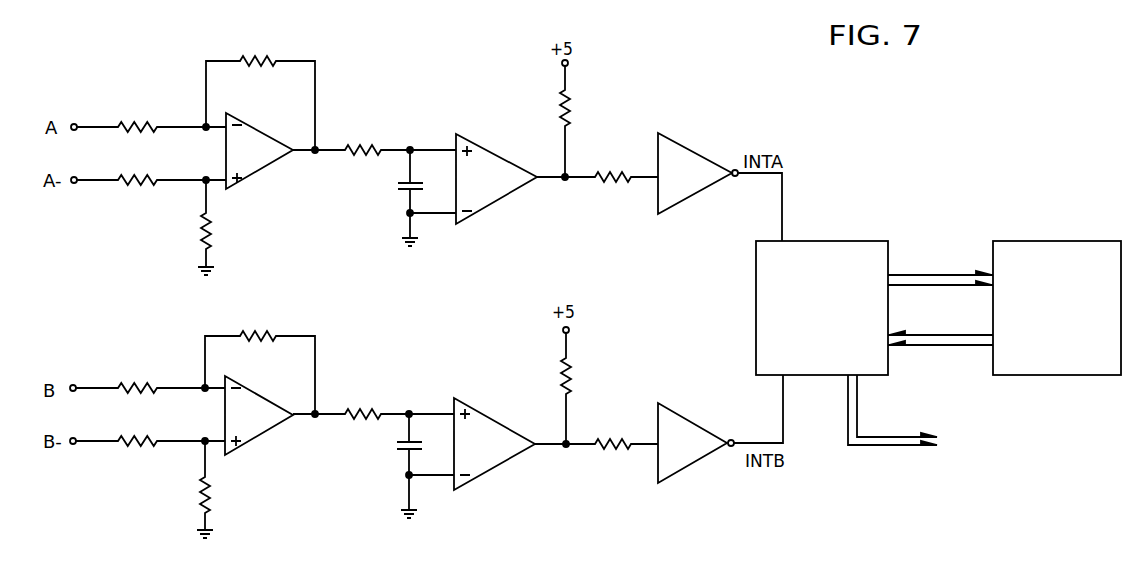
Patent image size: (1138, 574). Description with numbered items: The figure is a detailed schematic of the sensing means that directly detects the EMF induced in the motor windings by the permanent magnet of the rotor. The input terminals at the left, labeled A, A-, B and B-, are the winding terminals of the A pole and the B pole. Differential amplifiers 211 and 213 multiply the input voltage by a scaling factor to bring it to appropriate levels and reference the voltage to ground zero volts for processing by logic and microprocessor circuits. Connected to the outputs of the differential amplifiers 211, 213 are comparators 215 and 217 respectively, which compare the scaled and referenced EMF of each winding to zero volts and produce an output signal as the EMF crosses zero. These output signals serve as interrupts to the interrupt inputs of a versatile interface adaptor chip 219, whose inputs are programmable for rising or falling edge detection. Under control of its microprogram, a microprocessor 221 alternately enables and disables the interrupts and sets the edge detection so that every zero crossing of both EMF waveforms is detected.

The differential amplifier 211 is at (248, 121).
The differential amplifier 213 is at (258, 437).
The comparator 215 is at (490, 150).
The comparator 217 is at (493, 418).
The versatile interface adaptor chip 219 is at (850, 239).
The microprocessor 221 is at (1075, 239).